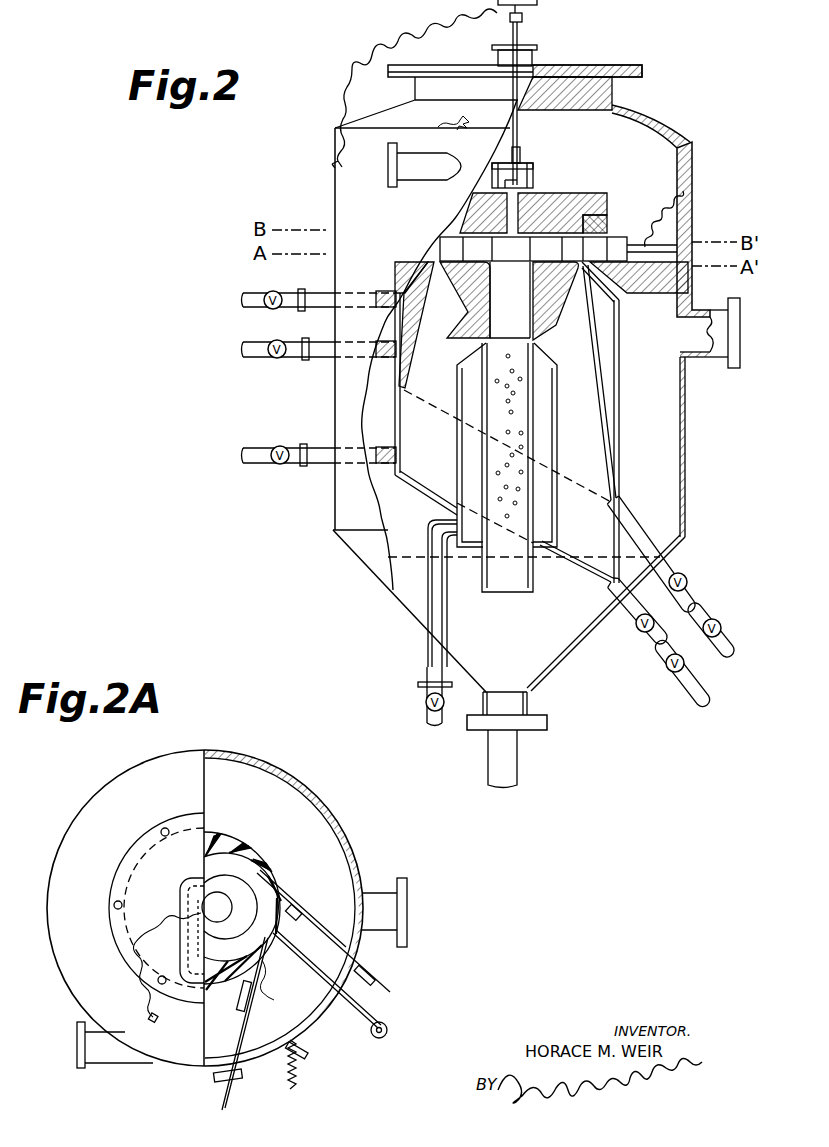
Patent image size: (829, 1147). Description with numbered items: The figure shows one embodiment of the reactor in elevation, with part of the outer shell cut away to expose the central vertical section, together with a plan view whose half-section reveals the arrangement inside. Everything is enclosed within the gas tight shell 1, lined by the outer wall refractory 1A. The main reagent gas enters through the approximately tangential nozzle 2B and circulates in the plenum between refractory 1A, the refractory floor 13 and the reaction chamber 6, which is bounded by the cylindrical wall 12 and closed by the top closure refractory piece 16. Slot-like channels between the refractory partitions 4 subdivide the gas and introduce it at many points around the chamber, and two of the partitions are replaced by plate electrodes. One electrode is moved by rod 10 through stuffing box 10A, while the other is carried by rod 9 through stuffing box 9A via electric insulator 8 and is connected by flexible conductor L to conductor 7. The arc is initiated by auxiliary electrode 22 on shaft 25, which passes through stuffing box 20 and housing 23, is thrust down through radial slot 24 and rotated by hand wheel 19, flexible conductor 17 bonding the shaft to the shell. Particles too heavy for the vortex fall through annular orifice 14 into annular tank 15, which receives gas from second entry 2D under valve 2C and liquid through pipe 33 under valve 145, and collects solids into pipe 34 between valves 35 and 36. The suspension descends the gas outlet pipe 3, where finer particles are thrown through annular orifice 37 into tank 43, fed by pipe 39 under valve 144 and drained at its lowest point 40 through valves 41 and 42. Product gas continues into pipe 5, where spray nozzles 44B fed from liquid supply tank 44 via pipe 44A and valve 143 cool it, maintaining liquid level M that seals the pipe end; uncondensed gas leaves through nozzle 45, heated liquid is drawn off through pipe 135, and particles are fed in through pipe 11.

In FIG. 2, the gas tight shell 1 is at (693, 155).
In FIG. 2, the outer wall refractory 1A is at (648, 120).
In FIG. 2, the nozzle 2B is at (410, 168).
In FIG. 2A, the nozzle 2B is at (97, 1040).
In FIG. 2, the valve 2C is at (267, 292).
In FIG. 2, the second gas phase entry 2D is at (323, 293).
In FIG. 2, the gas outlet pipe 3 is at (517, 296).
In FIG. 2A, the gas outlet pipe 3 is at (222, 902).
In FIG. 2A, the refractory partitions 4 is at (212, 842).
In FIG. 2, the pipe 5 is at (514, 580).
In FIG. 2, the reaction chamber 6 is at (460, 248).
In FIG. 2A, the conductor 7 is at (296, 1107).
In FIG. 2A, the electric insulator 8 is at (247, 1000).
In FIG. 2, the rod 9 is at (655, 220).
In FIG. 2A, the rod 9 is at (345, 885).
In FIG. 2A, the stuffing box 9A is at (242, 1078).
In FIG. 2A, the rod 10 is at (312, 930).
In FIG. 2A, the stuffing box 10A is at (372, 968).
In FIG. 2A, the pipe 11 is at (360, 1012).
In FIG. 2, the cylindrical wall 12 is at (598, 225).
In FIG. 2, the refractory floor 13 is at (660, 283).
In FIG. 2, the annular orifice 14 is at (587, 270).
In FIG. 2A, the annular orifice 14 is at (215, 855).
In FIG. 2, the tank 15 is at (600, 343).
In FIG. 2, the top closure refractory piece 16 is at (560, 212).
In FIG. 2, the flexible conductor 17 is at (420, 34).
In FIG. 2A, the flexible conductor 17 is at (126, 980).
In FIG. 2, the hand wheel 19 is at (537, 2).
In FIG. 2, the stuffing box 20 is at (532, 56).
In FIG. 2, the electrode 22 is at (505, 172).
In FIG. 2A, the electrode 22 is at (186, 944).
In FIG. 2, the housing 23 is at (533, 173).
In FIG. 2, the radial slot 24 is at (505, 218).
In FIG. 2, the shaft 25 is at (519, 135).
In FIG. 2, the pipe 33 is at (325, 357).
In FIG. 2, the pipe 34 is at (648, 530).
In FIG. 2, the valve 35 is at (687, 576).
In FIG. 2, the valve 36 is at (720, 618).
In FIG. 2, the annular orifice 37 is at (426, 325).
In FIG. 2, the pipe 39 is at (318, 463).
In FIG. 2, the lowest point 40 is at (618, 596).
In FIG. 2, the valve 41 is at (636, 628).
In FIG. 2A, the valve 41 is at (265, 895).
In FIG. 2, the valve 42 is at (668, 670).
In FIG. 2A, the valve 42 is at (250, 955).
In FIG. 2, the tank 43 is at (410, 425).
In FIG. 2, the liquid supply tank 44 is at (478, 464).
In FIG. 2, the pipe 44A is at (437, 608).
In FIG. 2, the spray nozzles 44B is at (521, 500).
In FIG. 2, the nozzle 45 is at (718, 348).
In FIG. 2, the pipe 135 is at (510, 762).
In FIG. 2, the valve 143 is at (427, 700).
In FIG. 2, the valve 144 is at (276, 447).
In FIG. 2, the valve 145 is at (272, 357).
In FIG. 2, the liquid level M is at (397, 556).
In FIG. 2A, the flexible conductor L is at (269, 981).